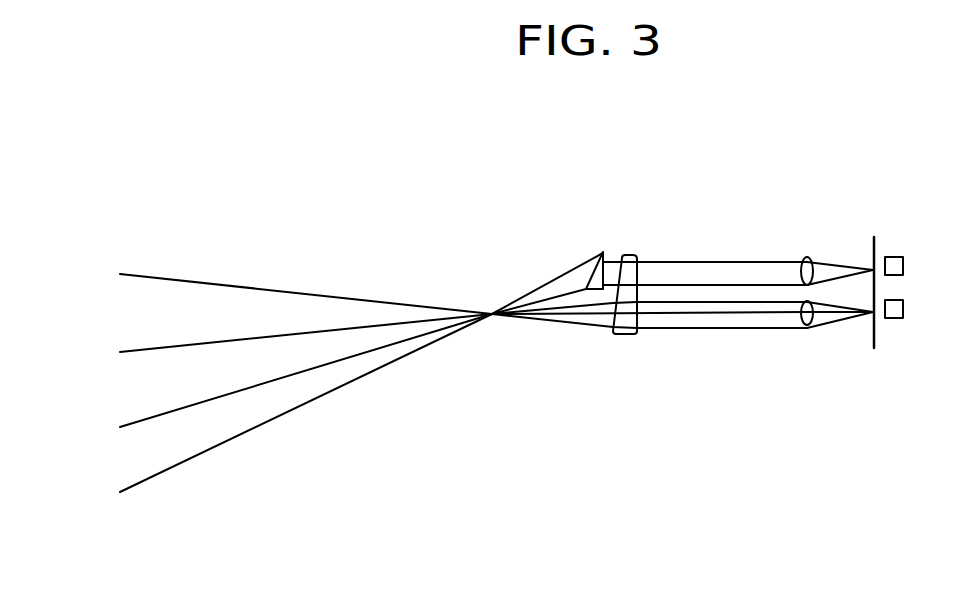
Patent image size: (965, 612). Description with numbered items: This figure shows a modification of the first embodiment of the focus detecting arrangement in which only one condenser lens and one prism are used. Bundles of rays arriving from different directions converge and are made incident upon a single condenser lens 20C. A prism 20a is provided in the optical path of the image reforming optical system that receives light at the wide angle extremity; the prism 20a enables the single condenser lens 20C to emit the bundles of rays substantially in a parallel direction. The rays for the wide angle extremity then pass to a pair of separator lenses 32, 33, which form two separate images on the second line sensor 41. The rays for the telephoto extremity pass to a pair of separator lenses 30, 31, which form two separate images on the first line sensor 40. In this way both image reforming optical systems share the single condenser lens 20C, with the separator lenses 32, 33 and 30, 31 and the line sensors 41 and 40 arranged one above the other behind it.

The prism 20a is at (600, 254).
The single condenser lens 20C is at (628, 334).
The separator lens 32 is at (791, 243).
The separator lens 33 is at (804, 259).
The separator lens 30 is at (821, 349).
The separator lens 31 is at (810, 328).
The second line sensor 41 is at (903, 266).
The first line sensor 40 is at (903, 308).